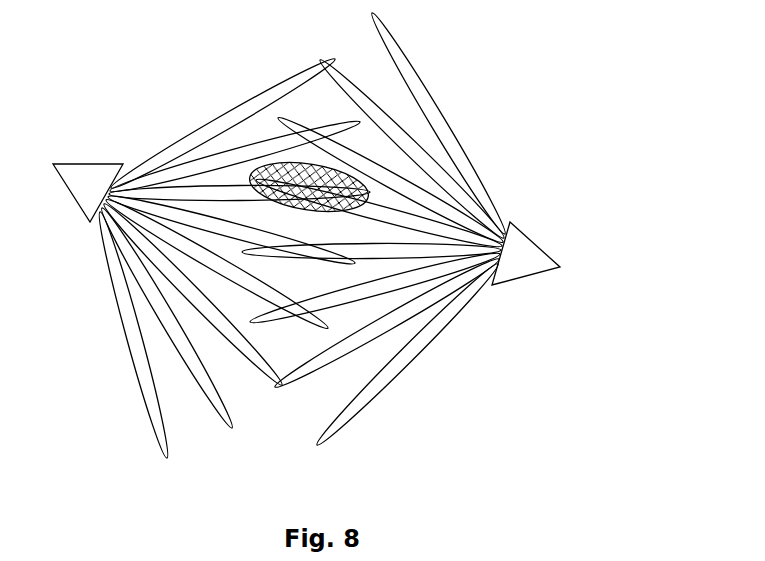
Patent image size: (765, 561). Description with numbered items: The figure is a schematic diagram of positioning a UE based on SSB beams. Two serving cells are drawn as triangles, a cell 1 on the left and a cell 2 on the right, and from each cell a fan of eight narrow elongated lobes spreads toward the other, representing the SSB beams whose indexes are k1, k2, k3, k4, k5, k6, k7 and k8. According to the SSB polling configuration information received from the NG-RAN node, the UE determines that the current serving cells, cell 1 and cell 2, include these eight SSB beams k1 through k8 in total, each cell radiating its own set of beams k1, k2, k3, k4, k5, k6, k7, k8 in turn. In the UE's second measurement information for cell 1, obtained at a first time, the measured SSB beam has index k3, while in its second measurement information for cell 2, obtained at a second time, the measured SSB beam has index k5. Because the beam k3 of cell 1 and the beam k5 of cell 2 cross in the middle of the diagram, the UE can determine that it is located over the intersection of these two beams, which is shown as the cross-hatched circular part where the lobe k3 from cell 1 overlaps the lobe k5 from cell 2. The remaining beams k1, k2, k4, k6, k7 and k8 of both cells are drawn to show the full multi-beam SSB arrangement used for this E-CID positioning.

The element cell 1 is at (88, 183).
The element cell 2 is at (529, 248).
The SSB beam k1 is at (305, 252).
The SSB beam k2 is at (305, 250).
The SSB beam k3 is at (305, 252).
The SSB beam k4 is at (303, 230).
The SSB beam k5 is at (303, 254).
The SSB beam k6 is at (303, 250).
The SSB beam k7 is at (302, 243).
The SSB beam k8 is at (302, 234).